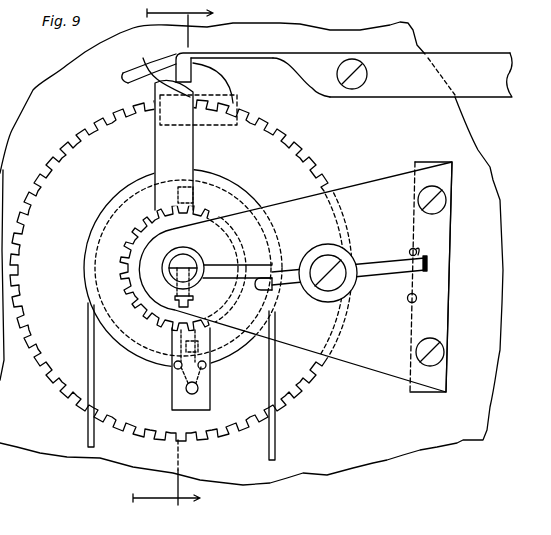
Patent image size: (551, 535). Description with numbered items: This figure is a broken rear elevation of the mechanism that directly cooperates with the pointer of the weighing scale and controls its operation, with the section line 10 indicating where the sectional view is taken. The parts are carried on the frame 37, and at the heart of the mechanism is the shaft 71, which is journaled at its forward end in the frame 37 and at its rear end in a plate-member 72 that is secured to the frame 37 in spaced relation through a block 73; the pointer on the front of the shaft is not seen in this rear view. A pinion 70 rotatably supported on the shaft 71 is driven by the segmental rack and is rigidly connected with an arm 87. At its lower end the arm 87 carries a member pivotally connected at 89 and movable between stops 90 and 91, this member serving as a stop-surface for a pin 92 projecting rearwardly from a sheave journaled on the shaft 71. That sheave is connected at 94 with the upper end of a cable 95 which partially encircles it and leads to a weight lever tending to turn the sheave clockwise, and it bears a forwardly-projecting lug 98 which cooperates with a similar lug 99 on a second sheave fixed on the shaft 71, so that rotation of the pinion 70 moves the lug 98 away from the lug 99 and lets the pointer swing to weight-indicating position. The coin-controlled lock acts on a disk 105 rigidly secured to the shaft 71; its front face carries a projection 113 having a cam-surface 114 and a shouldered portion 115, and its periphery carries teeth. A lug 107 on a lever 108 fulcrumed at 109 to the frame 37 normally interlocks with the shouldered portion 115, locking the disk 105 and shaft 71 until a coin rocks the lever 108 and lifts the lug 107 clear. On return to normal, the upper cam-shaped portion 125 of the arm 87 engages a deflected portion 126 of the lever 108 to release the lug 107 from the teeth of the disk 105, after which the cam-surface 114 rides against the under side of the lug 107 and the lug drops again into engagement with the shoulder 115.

The section line 10 is at (173, 263).
The frame 37 is at (345, 430).
The pinion 70 is at (140, 240).
The shaft 71 is at (192, 262).
The plate-member 72 is at (315, 261).
The block 73 is at (432, 393).
The arm 87 is at (193, 145).
The pivot 89 is at (193, 400).
The stop 90 is at (176, 369).
The stop 91 is at (208, 369).
The pin 92 is at (262, 292).
The cable connection 94 is at (295, 277).
The cable 95 is at (275, 443).
The lug 98 is at (155, 175).
The lug 99 is at (218, 172).
The disk 105 is at (88, 138).
The lug 107 is at (332, 78).
The lever 108 is at (327, 95).
The fulcrum 109 is at (355, 80).
The projection 113 is at (226, 88).
The cam-surface 114 is at (225, 88).
The shouldered portion 115 is at (188, 52).
The cam-shaped portion 125 is at (165, 60).
The deflected portion 126 is at (137, 80).